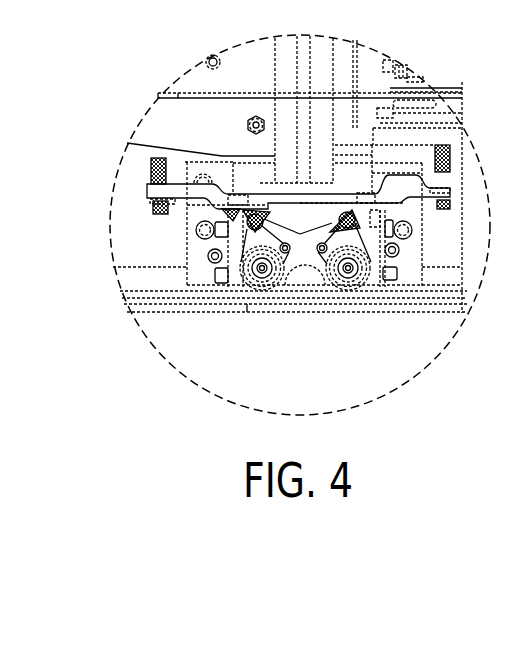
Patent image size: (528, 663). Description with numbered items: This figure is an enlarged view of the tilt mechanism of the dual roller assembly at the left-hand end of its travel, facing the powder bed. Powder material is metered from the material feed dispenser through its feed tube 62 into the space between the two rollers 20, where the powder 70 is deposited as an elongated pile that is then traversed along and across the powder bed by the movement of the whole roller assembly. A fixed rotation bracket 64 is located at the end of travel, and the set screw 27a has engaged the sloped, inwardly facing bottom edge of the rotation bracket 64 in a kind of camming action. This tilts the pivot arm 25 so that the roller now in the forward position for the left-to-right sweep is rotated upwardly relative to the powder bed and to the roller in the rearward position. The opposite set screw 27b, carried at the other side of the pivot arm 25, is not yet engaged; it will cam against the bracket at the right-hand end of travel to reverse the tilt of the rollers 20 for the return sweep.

The feed tube 62 is at (303, 148).
The rotation bracket 64 is at (352, 128).
The set screw 27a is at (150, 175).
The set screw 27b is at (452, 162).
The pivot arm 25 is at (450, 180).
The rollers 20 is at (243, 277).
The powder 70 is at (303, 280).